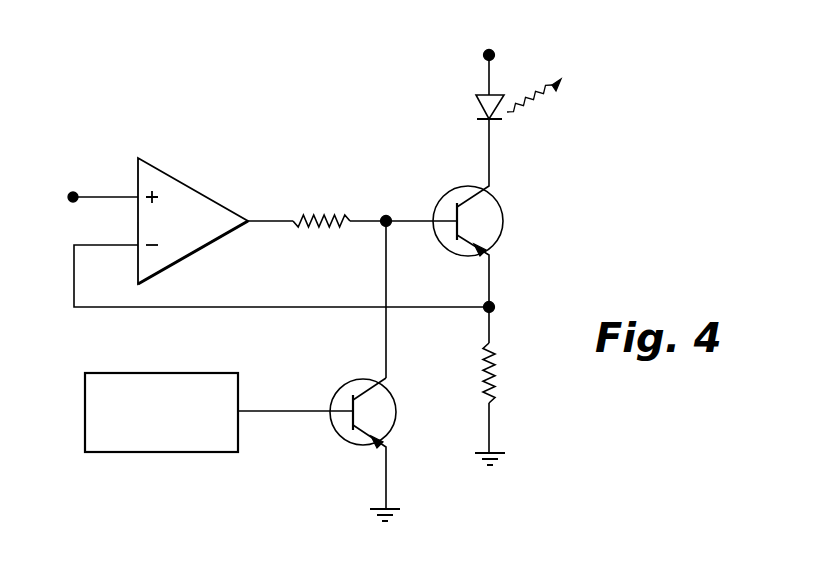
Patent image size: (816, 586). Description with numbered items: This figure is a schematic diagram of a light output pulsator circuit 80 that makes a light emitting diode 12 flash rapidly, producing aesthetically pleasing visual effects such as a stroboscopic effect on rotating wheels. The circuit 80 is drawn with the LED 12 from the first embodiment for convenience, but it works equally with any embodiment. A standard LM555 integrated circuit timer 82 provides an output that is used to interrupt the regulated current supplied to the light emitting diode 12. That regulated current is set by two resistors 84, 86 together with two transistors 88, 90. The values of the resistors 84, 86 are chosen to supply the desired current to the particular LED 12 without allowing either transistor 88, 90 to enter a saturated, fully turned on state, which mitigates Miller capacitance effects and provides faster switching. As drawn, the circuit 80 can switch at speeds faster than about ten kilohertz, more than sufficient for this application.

The circuit 80 is at (138, 506).
The light emitting diode 12 is at (478, 108).
The integrated circuit timer 82 is at (173, 437).
The resistor 84 is at (322, 215).
The resistor 86 is at (498, 389).
The transistor 88 is at (502, 211).
The transistor 90 is at (345, 382).